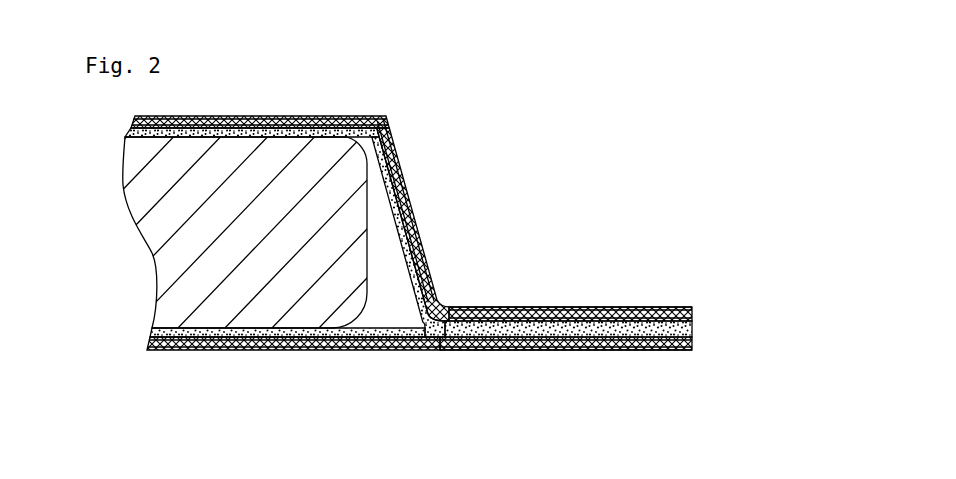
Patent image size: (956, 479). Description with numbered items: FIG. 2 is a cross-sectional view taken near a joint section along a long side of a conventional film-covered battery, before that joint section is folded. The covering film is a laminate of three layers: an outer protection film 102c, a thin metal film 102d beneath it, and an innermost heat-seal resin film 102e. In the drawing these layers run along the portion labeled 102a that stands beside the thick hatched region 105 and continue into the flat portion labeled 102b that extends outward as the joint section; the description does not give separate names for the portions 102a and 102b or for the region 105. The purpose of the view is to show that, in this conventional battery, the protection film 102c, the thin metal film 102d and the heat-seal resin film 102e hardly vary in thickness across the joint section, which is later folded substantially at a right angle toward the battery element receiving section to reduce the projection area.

The electronic component body 105 is at (188, 248).
The side wall portion of laminate 102a is at (408, 202).
The bottom portion of laminate 102b is at (382, 350).
The protection film 102c is at (688, 308).
The thin metal film 102d is at (692, 314).
The heat-seal resin film 102e is at (692, 325).